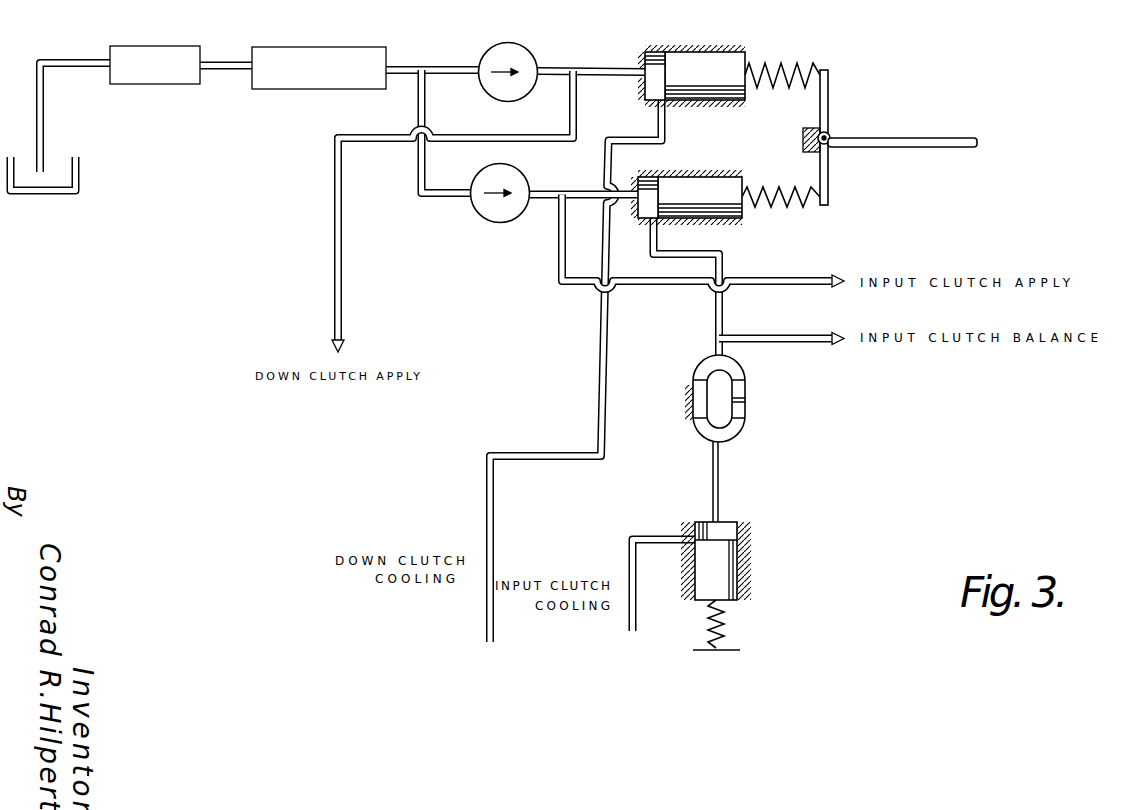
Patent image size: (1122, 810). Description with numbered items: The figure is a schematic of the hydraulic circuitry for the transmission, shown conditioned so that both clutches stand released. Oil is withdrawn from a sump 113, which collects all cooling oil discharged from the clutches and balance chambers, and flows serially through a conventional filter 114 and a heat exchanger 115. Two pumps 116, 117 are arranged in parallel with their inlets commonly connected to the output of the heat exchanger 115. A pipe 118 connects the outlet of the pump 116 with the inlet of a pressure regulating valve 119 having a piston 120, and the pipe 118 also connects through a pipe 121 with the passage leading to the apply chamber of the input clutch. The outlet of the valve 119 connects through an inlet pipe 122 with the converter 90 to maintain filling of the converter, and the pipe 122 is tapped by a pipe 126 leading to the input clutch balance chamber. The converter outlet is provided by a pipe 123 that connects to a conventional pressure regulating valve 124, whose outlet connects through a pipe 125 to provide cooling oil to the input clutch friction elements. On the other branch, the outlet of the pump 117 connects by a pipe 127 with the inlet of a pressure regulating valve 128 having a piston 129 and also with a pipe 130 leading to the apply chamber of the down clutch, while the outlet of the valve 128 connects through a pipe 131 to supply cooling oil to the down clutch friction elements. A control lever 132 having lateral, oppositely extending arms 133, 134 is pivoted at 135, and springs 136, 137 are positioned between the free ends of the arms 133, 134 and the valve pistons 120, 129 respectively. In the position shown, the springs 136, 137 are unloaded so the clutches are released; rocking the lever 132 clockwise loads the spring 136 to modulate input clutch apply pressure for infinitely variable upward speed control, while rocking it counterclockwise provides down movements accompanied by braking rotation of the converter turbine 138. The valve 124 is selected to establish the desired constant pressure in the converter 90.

The converter 90 is at (746, 370).
The sump 113 is at (80, 182).
The filter 114 is at (147, 87).
The heat exchanger 115 is at (285, 90).
The pump 116 is at (485, 222).
The pump 117 is at (484, 48).
The pipe 118 is at (580, 181).
The pressure regulating valve 119 is at (700, 162).
The piston 120 is at (736, 177).
The pipe 121 is at (557, 262).
The inlet pipe 122 is at (726, 258).
The pipe 123 is at (720, 475).
The pressure regulating valve 124 is at (738, 556).
The pipe 125 is at (653, 526).
The pipe 126 is at (772, 334).
The pipe 127 is at (556, 67).
The pressure regulating valve 128 is at (681, 38).
The piston 129 is at (734, 51).
The pipe 130 is at (568, 110).
The pipe 131 is at (657, 117).
The control lever 132 is at (942, 135).
The arm 133 is at (830, 170).
The arm 134 is at (830, 95).
The pivot 135 is at (836, 134).
The spring 136 is at (774, 208).
The spring 137 is at (788, 66).
The converter turbine 138 is at (740, 388).